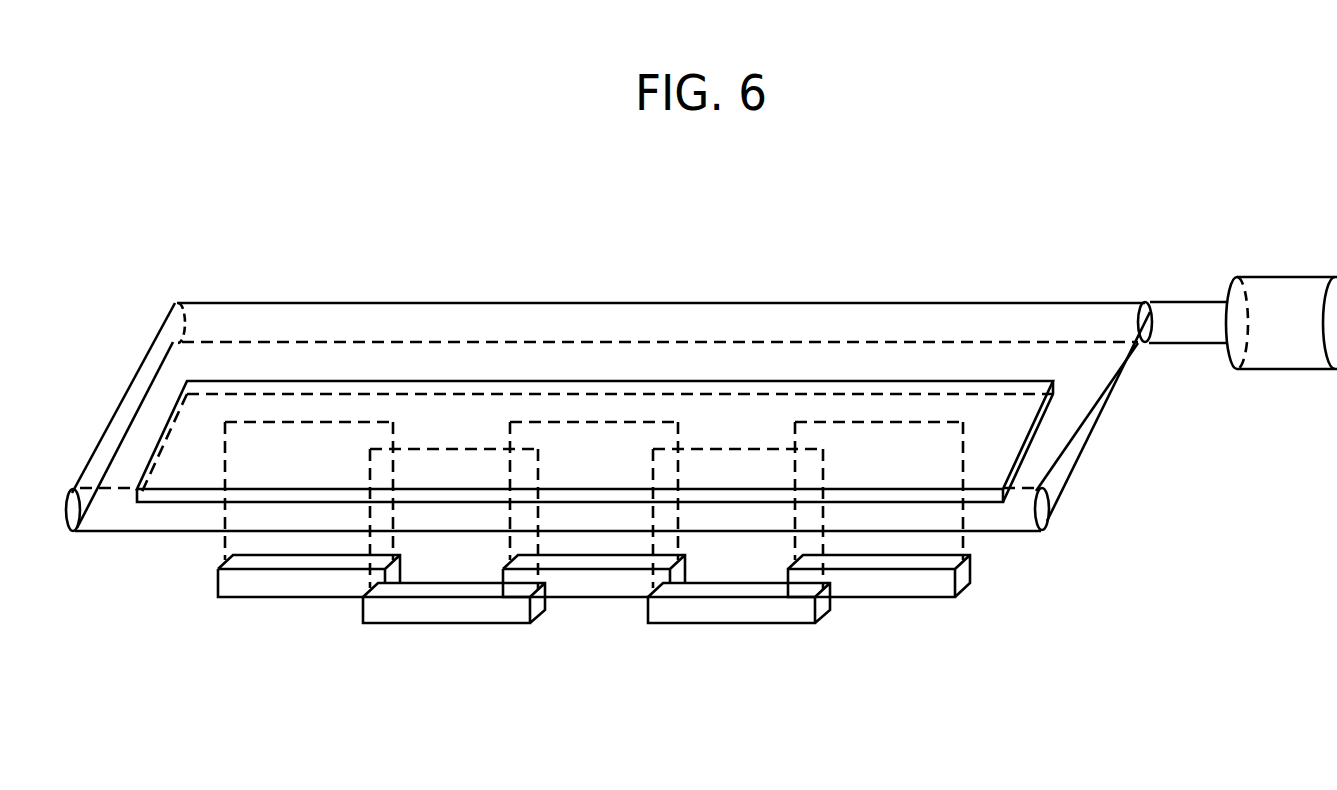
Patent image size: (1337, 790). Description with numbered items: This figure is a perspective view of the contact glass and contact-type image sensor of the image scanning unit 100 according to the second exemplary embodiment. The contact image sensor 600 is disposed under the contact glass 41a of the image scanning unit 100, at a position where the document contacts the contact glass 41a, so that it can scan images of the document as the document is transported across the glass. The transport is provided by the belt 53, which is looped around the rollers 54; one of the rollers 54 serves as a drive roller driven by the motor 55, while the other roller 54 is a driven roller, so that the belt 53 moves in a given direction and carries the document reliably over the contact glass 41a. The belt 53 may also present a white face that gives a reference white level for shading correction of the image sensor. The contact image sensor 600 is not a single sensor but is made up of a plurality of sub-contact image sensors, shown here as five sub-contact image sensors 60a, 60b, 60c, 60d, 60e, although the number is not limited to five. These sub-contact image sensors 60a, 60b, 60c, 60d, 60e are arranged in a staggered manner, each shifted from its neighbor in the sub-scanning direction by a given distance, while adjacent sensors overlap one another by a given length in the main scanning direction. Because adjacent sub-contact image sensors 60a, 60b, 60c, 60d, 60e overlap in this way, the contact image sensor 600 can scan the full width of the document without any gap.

The image scanning unit 100 is at (352, 205).
The belt 53 is at (140, 368).
The rollers 54 is at (1172, 300).
The motor 55 is at (1287, 275).
The contact glass 41a is at (158, 445).
The contact image sensor 600 is at (186, 586).
The sub-contact image sensor 60a is at (285, 598).
The sub-contact image sensor 60b is at (445, 625).
The sub-contact image sensor 60c is at (588, 598).
The sub-contact image sensor 60d is at (733, 625).
The sub-contact image sensor 60e is at (883, 598).